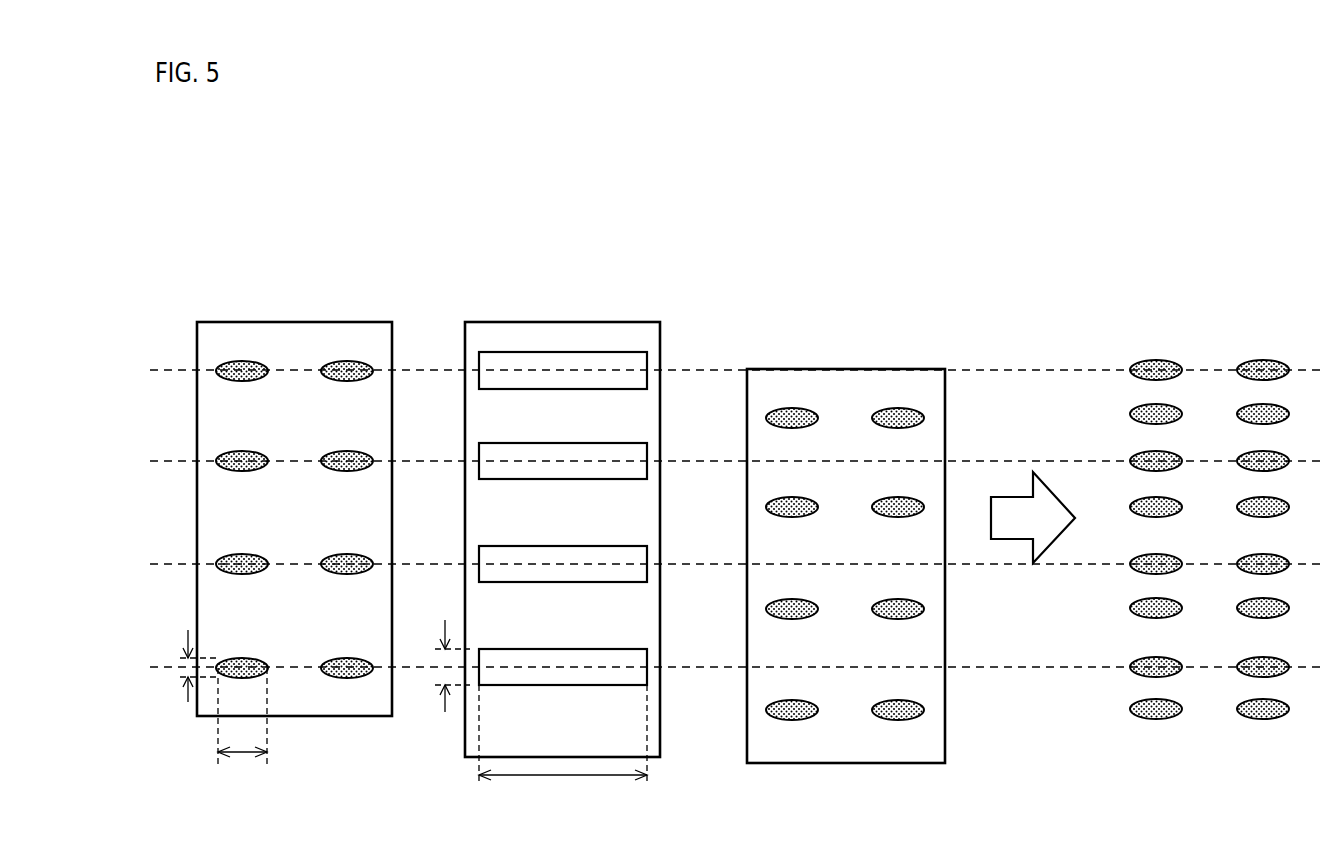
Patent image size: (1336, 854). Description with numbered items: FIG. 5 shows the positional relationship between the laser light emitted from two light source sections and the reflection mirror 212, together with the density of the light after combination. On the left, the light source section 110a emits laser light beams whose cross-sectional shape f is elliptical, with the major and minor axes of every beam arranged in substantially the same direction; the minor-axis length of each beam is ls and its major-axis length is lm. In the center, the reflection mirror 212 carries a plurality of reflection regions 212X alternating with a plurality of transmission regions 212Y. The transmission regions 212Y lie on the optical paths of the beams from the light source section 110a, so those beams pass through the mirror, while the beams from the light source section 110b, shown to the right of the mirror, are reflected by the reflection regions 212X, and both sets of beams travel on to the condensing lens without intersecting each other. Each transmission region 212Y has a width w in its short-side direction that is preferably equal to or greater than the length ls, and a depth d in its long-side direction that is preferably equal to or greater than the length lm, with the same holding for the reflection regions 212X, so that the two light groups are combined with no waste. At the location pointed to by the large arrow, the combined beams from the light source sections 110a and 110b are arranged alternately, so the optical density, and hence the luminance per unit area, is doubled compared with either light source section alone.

The light source section 110a is at (300, 305).
The light source section 110b is at (850, 353).
The reflection mirror 212 is at (570, 489).
The reflection region 212X is at (505, 332).
The transmission region 212Y is at (640, 378).
The cross-sectional shape of laser light f is at (243, 360).
The length of laser light beam in minor-axis direction ls is at (185, 666).
The length of laser light beam in major-axis direction lm is at (242, 732).
The width of transmission region w is at (443, 666).
The depth of transmission region d is at (563, 751).